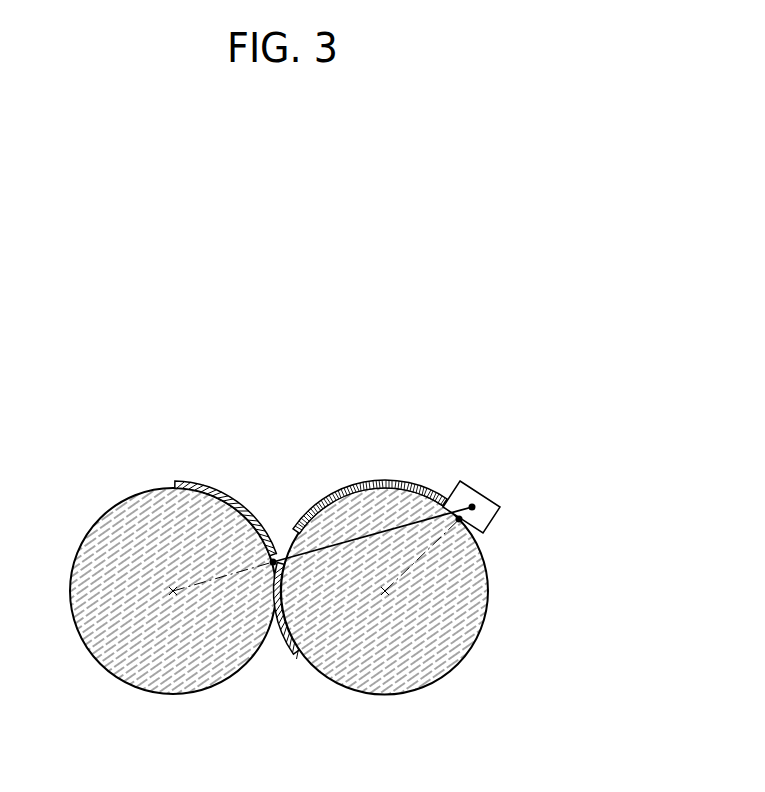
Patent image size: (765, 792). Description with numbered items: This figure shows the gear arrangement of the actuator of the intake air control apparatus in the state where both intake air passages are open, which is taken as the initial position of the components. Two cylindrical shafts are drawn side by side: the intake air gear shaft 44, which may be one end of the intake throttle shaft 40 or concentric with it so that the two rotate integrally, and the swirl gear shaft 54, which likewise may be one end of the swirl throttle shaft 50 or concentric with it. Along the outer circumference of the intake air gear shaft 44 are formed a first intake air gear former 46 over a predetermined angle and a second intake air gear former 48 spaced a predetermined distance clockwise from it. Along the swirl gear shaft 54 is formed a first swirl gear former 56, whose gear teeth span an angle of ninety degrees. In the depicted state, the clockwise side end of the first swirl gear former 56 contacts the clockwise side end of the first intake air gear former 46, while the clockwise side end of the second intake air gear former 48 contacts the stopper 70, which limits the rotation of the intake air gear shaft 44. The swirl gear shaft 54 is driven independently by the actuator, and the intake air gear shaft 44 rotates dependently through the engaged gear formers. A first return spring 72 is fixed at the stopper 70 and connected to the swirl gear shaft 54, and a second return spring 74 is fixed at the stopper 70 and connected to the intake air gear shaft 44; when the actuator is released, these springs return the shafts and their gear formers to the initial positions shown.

The intake throttle shaft 40 is at (384, 635).
The intake air gear shaft 44 is at (386, 694).
The first intake air gear former 46 is at (297, 660).
The second intake air gear former 48 is at (383, 480).
The swirl throttle shaft 50 is at (173, 635).
The swirl gear shaft 54 is at (175, 694).
The first swirl gear former 56 is at (176, 481).
The stopper 70 is at (480, 482).
The first return spring 72 is at (328, 548).
The second return spring 74 is at (483, 519).